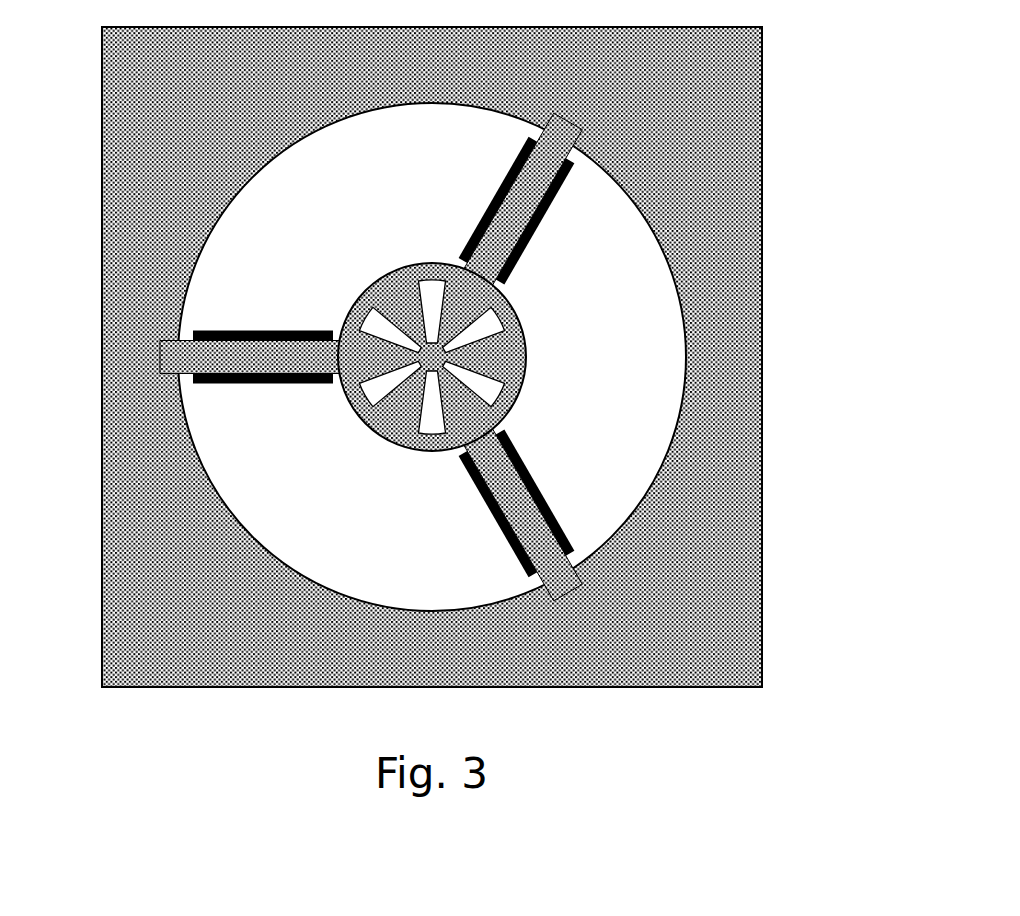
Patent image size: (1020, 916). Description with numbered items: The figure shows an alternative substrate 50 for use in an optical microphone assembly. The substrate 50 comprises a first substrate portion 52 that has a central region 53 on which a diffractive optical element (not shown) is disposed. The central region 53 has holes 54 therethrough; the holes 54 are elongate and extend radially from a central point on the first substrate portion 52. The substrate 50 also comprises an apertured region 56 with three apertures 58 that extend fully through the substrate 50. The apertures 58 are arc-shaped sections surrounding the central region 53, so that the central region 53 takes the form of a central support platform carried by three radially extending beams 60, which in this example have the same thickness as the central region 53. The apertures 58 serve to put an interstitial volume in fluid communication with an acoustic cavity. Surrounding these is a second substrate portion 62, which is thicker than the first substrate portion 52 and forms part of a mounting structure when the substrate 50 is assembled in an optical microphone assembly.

The substrate 50 is at (463, 380).
The first substrate portion 52 is at (423, 418).
The central region 53 is at (471, 378).
The holes 54 is at (430, 422).
The apertured region 56 is at (513, 585).
The apertures 58 is at (417, 182).
The beams 60 is at (528, 175).
The second substrate portion 62 is at (165, 230).